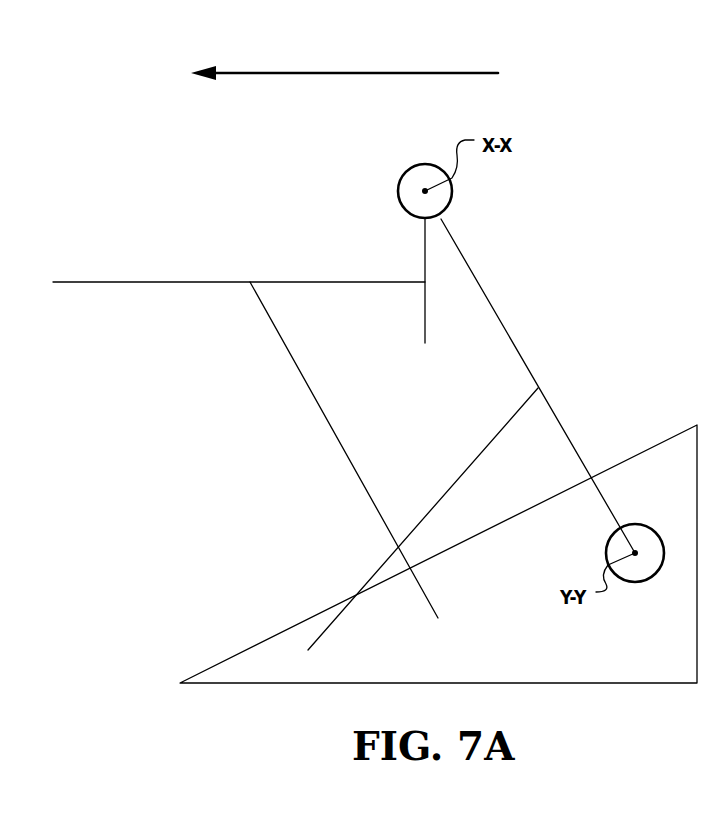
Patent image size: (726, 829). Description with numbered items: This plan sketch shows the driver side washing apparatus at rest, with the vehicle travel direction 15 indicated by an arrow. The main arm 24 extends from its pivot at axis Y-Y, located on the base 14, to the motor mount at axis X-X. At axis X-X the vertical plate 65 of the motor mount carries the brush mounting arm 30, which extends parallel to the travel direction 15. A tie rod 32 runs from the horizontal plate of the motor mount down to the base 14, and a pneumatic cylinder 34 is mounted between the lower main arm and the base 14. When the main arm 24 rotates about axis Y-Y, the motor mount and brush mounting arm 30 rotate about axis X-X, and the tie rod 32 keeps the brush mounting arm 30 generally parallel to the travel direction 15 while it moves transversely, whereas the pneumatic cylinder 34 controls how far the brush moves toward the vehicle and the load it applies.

The direction of travel 15 is at (315, 73).
The brush mounting arm 30 is at (100, 282).
The tie rod 32 is at (290, 362).
The vertical plate 65 is at (425, 307).
The main arm 24 is at (503, 323).
The pneumatic cylinder 34 is at (451, 487).
The base 14 is at (582, 643).